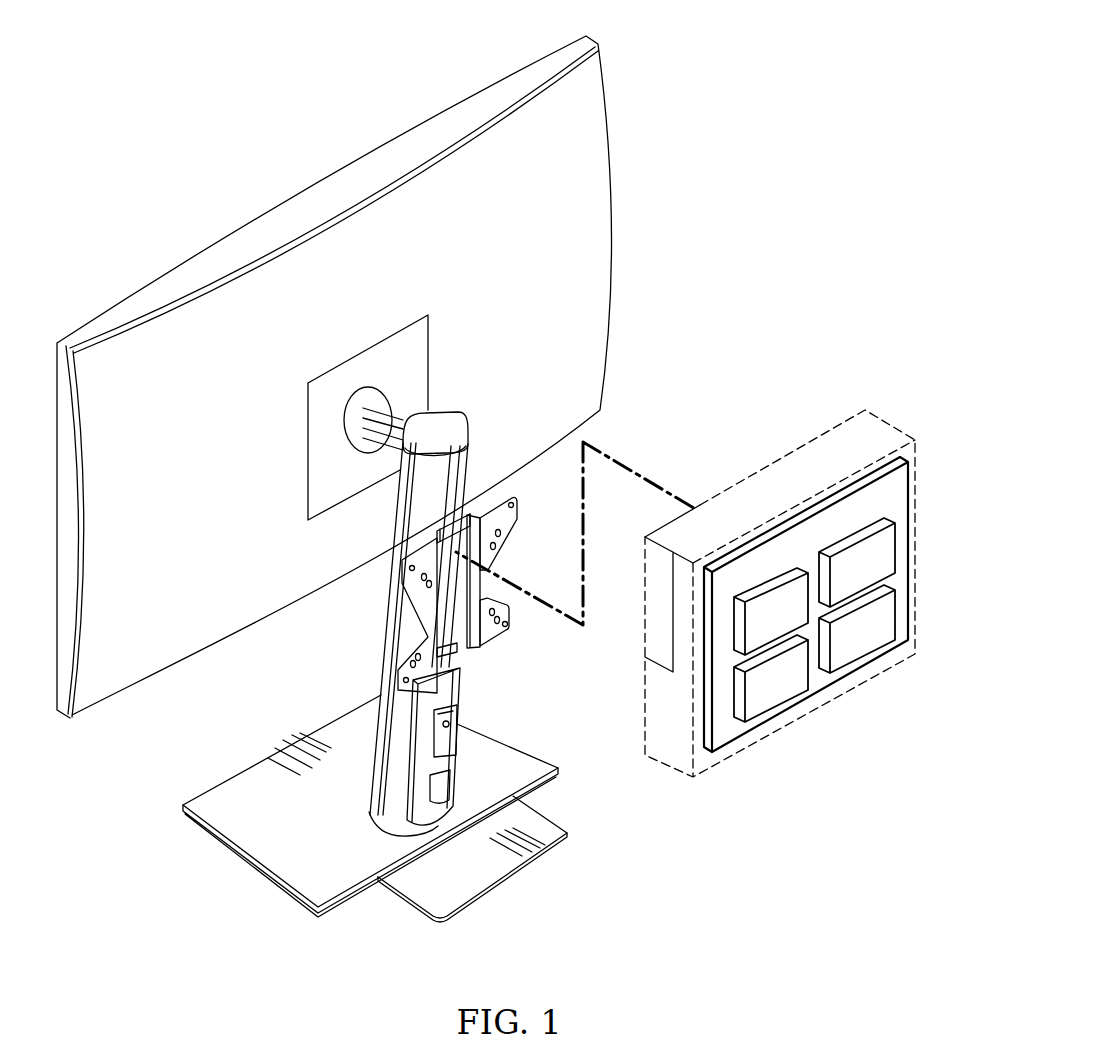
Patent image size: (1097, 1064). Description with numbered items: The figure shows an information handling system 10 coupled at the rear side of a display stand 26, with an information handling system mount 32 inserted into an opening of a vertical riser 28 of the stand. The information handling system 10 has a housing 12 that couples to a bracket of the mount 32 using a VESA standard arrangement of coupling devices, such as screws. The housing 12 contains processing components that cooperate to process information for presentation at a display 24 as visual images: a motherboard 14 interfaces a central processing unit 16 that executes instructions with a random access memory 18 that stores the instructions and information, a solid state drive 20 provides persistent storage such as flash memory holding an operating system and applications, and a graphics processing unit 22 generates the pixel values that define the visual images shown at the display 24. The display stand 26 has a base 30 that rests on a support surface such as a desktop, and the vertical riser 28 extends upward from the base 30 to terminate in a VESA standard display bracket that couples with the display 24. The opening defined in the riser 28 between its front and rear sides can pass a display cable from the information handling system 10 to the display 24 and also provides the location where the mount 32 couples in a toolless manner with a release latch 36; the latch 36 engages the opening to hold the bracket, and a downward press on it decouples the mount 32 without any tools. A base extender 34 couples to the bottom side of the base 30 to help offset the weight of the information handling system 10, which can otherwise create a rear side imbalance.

The information handling system 10 is at (716, 512).
The housing 12 is at (740, 480).
The motherboard 14 is at (782, 604).
The central processing unit 16 is at (747, 636).
The random access memory 18 is at (792, 689).
The solid state drive 20 is at (888, 553).
The graphics processing unit 22 is at (888, 610).
The display 24 is at (291, 208).
The display stand 26 is at (382, 698).
The vertical riser 28 is at (378, 775).
The base 30 is at (275, 882).
The information handling system mount 32 is at (567, 713).
The base extender 34 is at (478, 906).
The release latch 36 is at (510, 700).